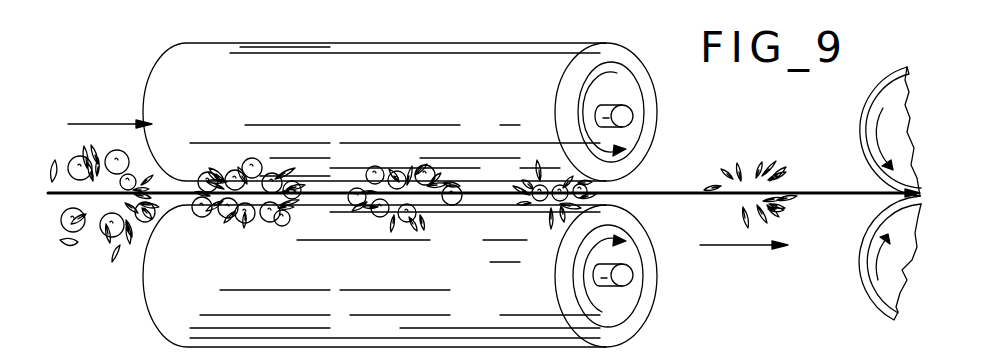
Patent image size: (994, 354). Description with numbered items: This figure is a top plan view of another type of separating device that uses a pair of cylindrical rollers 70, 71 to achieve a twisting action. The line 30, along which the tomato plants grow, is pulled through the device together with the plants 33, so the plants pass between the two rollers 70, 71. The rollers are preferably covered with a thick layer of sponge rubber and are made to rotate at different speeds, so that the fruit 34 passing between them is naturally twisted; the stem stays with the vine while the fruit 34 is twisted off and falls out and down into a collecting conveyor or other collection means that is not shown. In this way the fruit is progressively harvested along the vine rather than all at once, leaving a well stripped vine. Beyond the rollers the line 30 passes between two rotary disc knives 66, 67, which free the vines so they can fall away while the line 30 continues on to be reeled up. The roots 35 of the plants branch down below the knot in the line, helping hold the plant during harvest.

The line 30 is at (660, 192).
The plants 33 is at (88, 246).
The fruit 34 is at (148, 216).
The roots 35 is at (418, 347).
The rotary disc knife 66 is at (868, 117).
The rotary disc knife 67 is at (877, 293).
The cylindrical roller 70 is at (391, 285).
The cylindrical roller 71 is at (494, 97).